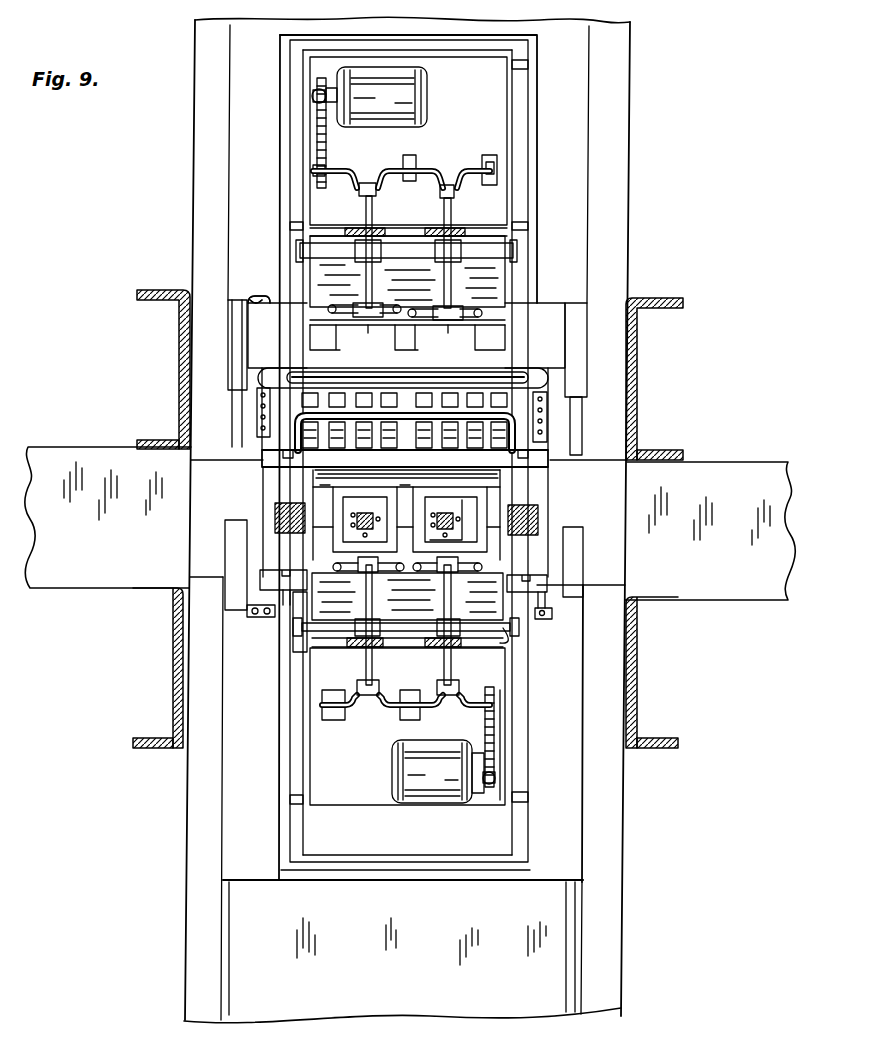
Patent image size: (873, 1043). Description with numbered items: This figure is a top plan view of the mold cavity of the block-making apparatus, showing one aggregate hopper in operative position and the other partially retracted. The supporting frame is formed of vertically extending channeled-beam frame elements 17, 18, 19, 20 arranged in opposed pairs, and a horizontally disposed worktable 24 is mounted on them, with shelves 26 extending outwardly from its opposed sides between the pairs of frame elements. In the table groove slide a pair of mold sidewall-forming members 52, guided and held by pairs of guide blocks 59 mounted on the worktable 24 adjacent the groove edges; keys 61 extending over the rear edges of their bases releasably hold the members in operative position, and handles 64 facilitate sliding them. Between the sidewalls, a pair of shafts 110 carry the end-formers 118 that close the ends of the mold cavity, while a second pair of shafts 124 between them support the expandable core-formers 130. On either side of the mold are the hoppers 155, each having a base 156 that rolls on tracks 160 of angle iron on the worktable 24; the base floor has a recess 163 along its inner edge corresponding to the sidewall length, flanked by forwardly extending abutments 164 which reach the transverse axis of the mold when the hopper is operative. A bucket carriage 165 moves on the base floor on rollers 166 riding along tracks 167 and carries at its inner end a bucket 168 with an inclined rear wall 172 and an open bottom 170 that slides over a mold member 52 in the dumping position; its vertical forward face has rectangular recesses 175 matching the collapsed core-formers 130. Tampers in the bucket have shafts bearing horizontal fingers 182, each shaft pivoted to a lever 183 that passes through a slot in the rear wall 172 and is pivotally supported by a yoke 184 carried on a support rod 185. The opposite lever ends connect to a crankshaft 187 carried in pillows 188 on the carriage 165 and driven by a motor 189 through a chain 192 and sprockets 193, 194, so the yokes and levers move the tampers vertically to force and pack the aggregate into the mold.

The frame element 17 is at (179, 320).
The frame element 18 is at (683, 303).
The frame element 19 is at (173, 683).
The frame element 20 is at (637, 690).
The worktable 24 is at (618, 137).
The shelf 26 is at (95, 572).
The mold sidewall-forming member 52 is at (555, 470).
The guide block 59 is at (547, 410).
The key 61 is at (330, 375).
The handle 64 is at (417, 420).
The shaft 110 is at (290, 516).
The end-former 118 is at (547, 475).
The shaft 124 is at (365, 513).
The expandable core-former 130 is at (460, 535).
The hopper 155 is at (576, 261).
The base 156 is at (570, 220).
The track 160 is at (250, 957).
The recess 163 is at (258, 284).
The abutment 164 is at (228, 362).
The bucket carriage 165 is at (520, 746).
The roller 166 is at (528, 71).
The track 167 is at (283, 188).
The bucket 168 is at (310, 330).
The open bottom 170 is at (525, 355).
The inclined rear wall 172 is at (355, 648).
The recess 175 is at (407, 331).
The finger 182 is at (333, 567).
The lever 183 is at (372, 213).
The yoke 184 is at (435, 622).
The support rod 185 is at (512, 640).
The crankshaft 187 is at (410, 720).
The pillow 188 is at (335, 720).
The motor 189 is at (415, 96).
The chain 192 is at (320, 150).
The sprocket 193 is at (314, 96).
The sprocket 194 is at (490, 692).